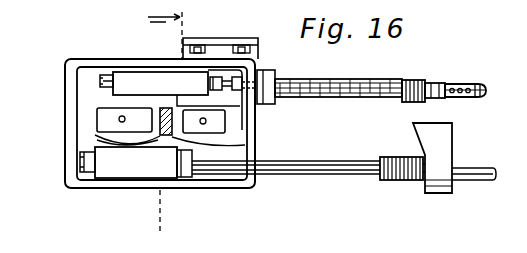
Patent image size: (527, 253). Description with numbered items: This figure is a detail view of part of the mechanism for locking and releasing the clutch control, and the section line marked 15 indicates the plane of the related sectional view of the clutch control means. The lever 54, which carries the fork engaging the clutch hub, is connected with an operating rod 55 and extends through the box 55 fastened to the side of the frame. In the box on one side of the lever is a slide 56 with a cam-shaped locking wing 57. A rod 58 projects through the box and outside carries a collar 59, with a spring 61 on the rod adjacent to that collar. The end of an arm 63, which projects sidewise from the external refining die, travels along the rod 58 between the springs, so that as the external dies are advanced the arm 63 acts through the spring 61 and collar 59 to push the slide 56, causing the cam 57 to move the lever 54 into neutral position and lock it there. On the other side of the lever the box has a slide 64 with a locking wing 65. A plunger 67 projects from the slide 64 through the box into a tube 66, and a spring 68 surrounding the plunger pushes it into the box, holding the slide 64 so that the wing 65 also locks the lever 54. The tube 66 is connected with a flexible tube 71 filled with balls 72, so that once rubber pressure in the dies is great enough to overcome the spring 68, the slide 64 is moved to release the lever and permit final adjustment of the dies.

The section line 15 is at (153, 122).
The lever 54 is at (252, 112).
The operating rod 55 is at (246, 203).
The slide 56 is at (136, 162).
The cam-shaped locking wing 57 is at (196, 143).
The rod 58 is at (300, 178).
The collar 59 is at (398, 181).
The spring 61 is at (410, 188).
The arm 63 is at (443, 140).
The slide 64 is at (177, 100).
The locking wing 65 is at (100, 93).
The tube 66 is at (316, 80).
The plunger 67 is at (428, 83).
The spring 68 is at (400, 82).
The flexible tube 71 is at (478, 88).
The balls 72 is at (463, 97).